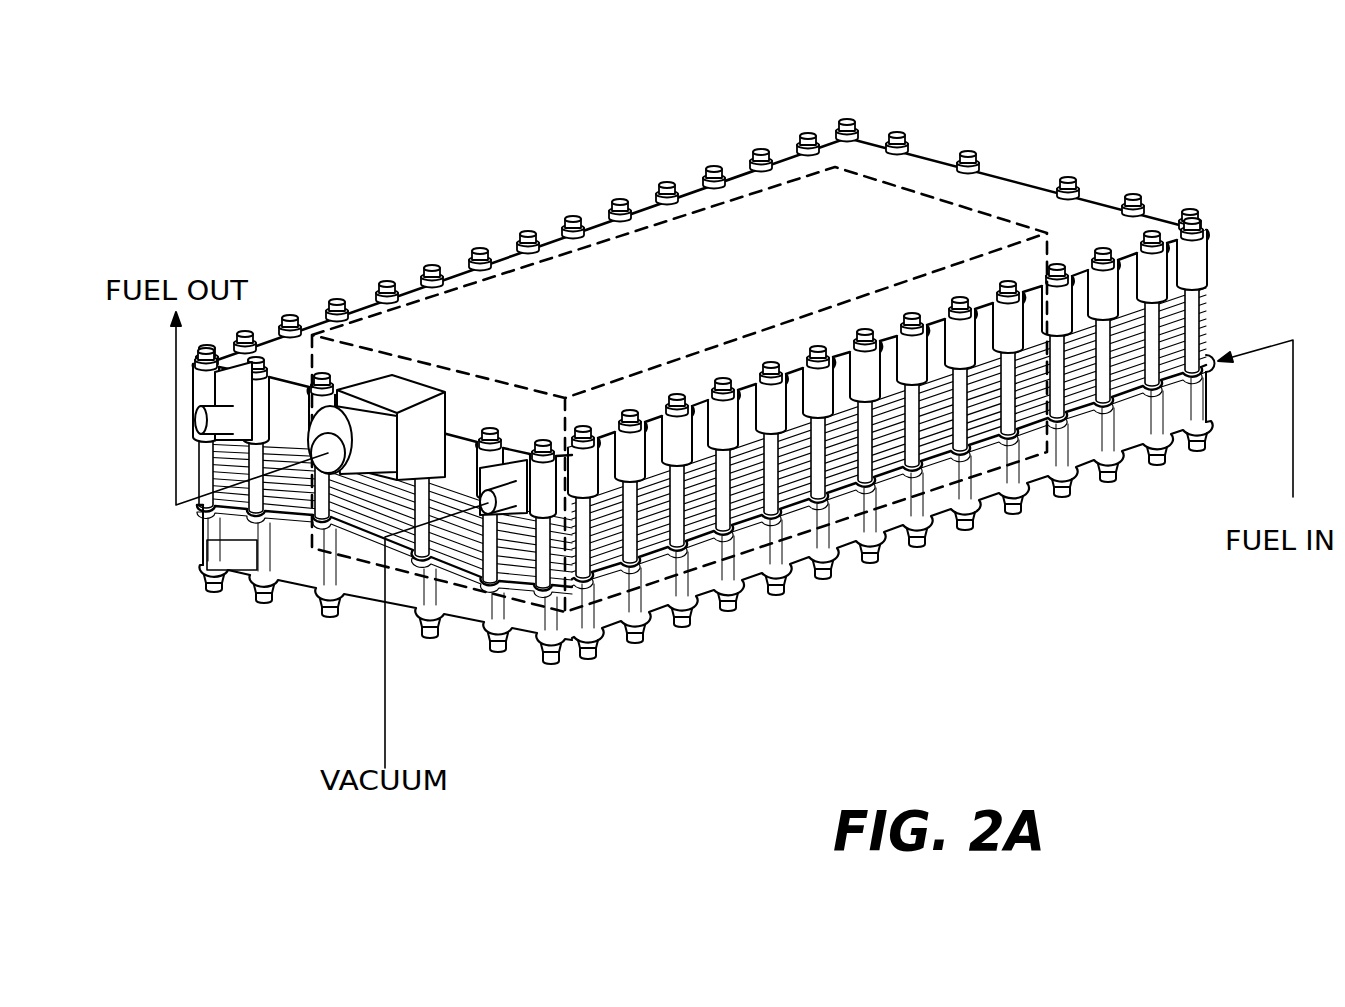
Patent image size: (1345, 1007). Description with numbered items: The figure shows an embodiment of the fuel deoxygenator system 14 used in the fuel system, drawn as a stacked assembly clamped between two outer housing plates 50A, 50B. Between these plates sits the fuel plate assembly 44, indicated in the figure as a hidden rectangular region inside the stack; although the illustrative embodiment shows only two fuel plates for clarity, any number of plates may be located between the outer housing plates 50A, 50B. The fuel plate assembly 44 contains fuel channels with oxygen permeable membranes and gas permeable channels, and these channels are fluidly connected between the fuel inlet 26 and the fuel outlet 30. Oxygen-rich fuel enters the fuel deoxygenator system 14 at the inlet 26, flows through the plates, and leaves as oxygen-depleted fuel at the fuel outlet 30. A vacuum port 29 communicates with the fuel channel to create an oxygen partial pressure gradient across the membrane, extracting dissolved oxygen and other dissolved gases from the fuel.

The fuel deoxygenator system 14 is at (745, 383).
The fuel inlet 26 is at (1214, 345).
The vacuum port 29 is at (488, 506).
The fuel outlet 30 is at (353, 413).
The fuel plate assembly 44 is at (598, 192).
The outer housing plate 50A is at (1198, 263).
The outer housing plate 50B is at (1087, 445).